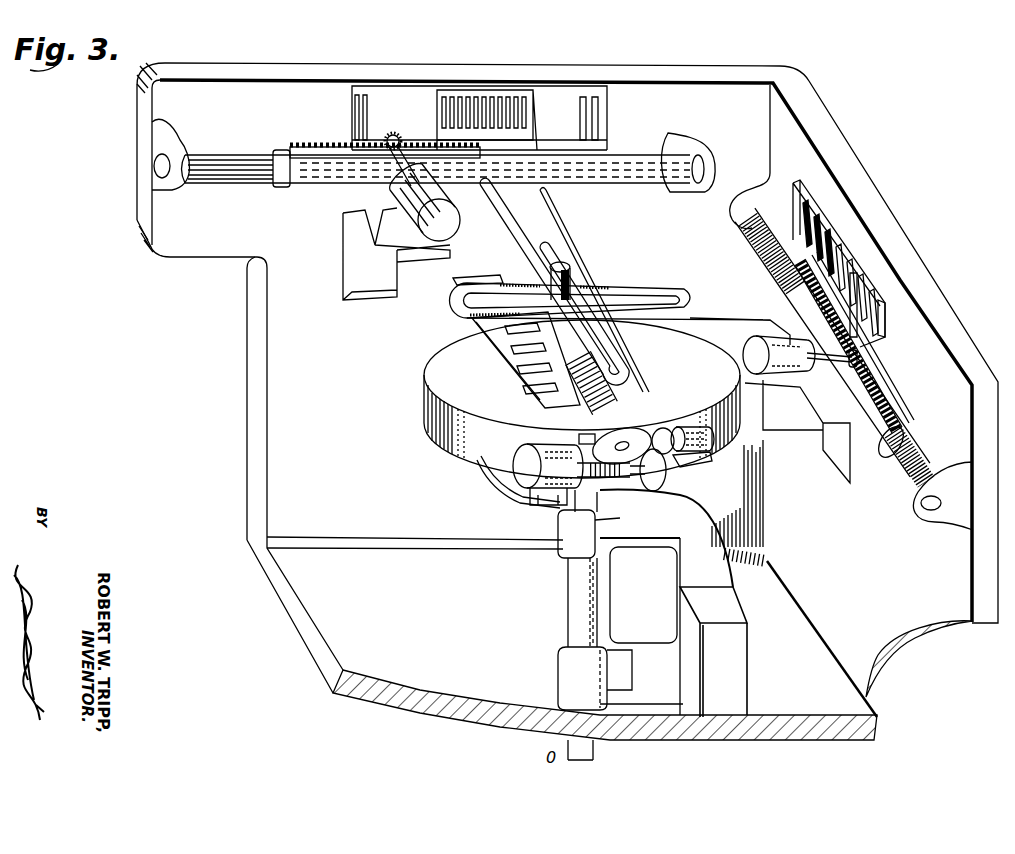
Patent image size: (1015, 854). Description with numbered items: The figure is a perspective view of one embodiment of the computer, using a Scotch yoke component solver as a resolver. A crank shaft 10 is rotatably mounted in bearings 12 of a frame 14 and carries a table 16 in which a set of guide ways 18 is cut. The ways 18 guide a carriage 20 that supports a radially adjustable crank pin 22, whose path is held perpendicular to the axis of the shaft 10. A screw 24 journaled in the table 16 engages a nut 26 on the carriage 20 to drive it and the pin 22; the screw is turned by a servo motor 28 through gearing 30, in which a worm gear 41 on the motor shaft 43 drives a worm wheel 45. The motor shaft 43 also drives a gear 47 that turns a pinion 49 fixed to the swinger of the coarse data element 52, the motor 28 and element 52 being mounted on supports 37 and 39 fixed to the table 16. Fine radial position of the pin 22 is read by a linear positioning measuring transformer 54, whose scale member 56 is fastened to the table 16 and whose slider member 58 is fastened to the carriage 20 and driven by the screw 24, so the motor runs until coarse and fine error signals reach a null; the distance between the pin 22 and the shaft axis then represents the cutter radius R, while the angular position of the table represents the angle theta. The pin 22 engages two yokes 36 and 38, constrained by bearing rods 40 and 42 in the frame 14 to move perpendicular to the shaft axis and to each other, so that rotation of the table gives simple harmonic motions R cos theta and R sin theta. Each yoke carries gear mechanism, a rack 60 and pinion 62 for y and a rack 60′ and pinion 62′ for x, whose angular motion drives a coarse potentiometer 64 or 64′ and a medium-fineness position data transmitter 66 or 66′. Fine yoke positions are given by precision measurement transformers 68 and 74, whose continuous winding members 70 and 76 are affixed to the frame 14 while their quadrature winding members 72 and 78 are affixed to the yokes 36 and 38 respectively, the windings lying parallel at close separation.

The shaft 10 is at (567, 604).
The bearings 12 is at (556, 523).
The frame 14 is at (284, 605).
The table 16 is at (428, 430).
The guide ways 18 is at (579, 440).
The carriage 20 is at (608, 339).
The crank pin 22 is at (572, 269).
The screw 24 is at (622, 400).
The nut 26 is at (620, 354).
The motor 28 is at (520, 483).
The gearing 30 is at (609, 479).
The yoke 36 is at (560, 234).
The support 37 is at (481, 466).
The yoke 38 is at (681, 287).
The support 39 is at (707, 466).
The bearing rod 40 is at (624, 184).
The worm gear 41 is at (637, 478).
The bearing rod 42 is at (748, 244).
The motor shaft 43 is at (579, 516).
The worm wheel 45 is at (646, 440).
The gear 47 is at (660, 491).
The pinion 49 is at (672, 454).
The coarse data element 52 is at (704, 451).
The linear positioning measuring transformer 54 is at (498, 362).
The scale member 56 is at (522, 385).
The slider member 58 is at (512, 328).
The rack 60 is at (320, 147).
The rack 60′ is at (905, 416).
The pinion 62 is at (397, 131).
The pinion 62′ is at (868, 360).
The potentiometer 64 is at (392, 196).
The potentiometer 64′ is at (772, 326).
The position data transmitter 66 is at (453, 229).
The position data transmitter 66′ is at (749, 346).
The precision measurement transformer 68 is at (530, 90).
The continuous winding member 70 is at (604, 115).
The quadrature winding member 72 is at (466, 95).
The precision measurement transformer 74 is at (845, 231).
The continuous winding member 76 is at (872, 309).
The quadrature winding member 78 is at (840, 266).